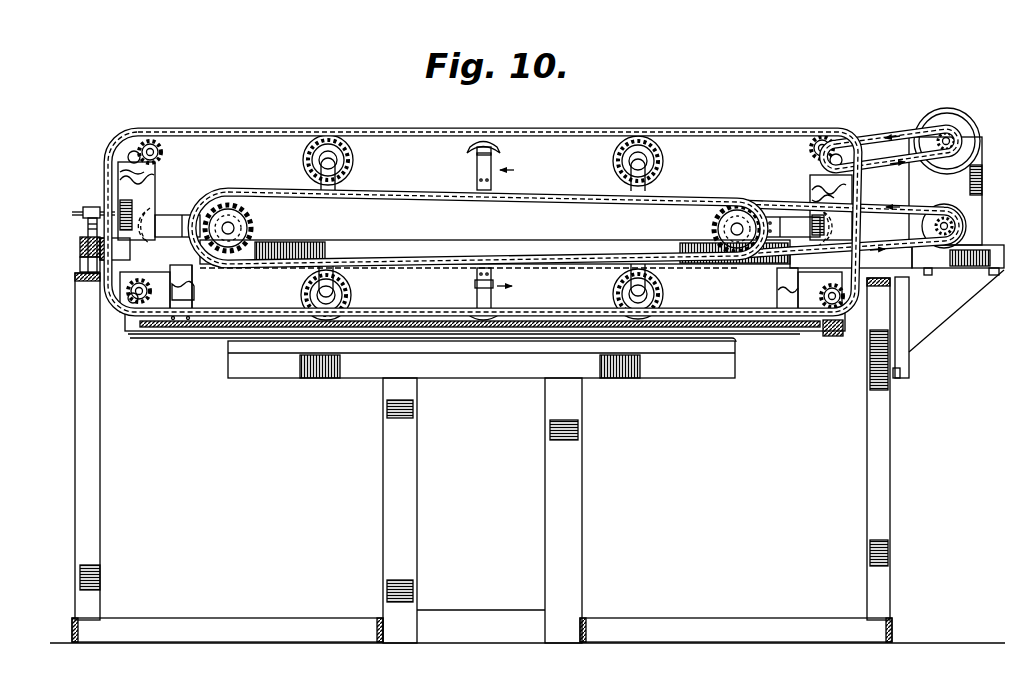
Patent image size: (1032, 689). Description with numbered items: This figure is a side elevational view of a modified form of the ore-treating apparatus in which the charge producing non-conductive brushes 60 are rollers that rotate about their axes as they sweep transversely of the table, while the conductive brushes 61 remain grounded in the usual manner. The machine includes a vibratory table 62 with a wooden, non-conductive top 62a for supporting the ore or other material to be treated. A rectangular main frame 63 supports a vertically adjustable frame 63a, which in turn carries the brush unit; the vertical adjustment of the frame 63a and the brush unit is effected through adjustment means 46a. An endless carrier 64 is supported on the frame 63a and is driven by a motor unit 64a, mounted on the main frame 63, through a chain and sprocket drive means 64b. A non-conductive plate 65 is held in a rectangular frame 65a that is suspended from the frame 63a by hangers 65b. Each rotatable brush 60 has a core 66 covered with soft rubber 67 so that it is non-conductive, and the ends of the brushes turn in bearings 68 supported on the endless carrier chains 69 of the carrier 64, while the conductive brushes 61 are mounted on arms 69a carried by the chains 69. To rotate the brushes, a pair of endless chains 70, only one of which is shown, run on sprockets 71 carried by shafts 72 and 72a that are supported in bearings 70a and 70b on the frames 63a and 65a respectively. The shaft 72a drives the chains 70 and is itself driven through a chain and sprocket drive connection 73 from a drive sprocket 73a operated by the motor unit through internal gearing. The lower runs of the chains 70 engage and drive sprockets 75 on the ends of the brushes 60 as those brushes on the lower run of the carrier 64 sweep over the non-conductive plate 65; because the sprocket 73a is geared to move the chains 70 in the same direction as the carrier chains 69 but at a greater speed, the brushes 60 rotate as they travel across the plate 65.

The adjustment means 46a is at (88, 208).
The charge producing non-conductive brushes 60 is at (353, 162).
The conductive brushes 61 is at (153, 214).
The vibratory table 62 is at (680, 378).
The non-conductive top 62a is at (228, 340).
The main frame 63 is at (73, 328).
The vertically adjustable frame 63a is at (426, 241).
The endless carrier 64 is at (583, 190).
The motor unit 64a is at (975, 141).
The chain and sprocket drive means 64b is at (876, 211).
The non-conductive plate 65 is at (180, 331).
The rectangular frame 65a is at (835, 330).
The hangers 65b is at (776, 285).
The core 66 is at (308, 157).
The soft rubber 67 is at (344, 152).
The bearings 68 is at (318, 164).
The endless carrier chains 69 is at (426, 197).
The arms 69a is at (476, 168).
The endless chains 70 is at (437, 128).
The bearings 70a is at (158, 178).
The bearings 70b is at (152, 330).
The sprockets 71 is at (152, 142).
The shaft 72 is at (127, 156).
The shaft 72a is at (829, 161).
The chain and sprocket drive connection 73 is at (906, 130).
The drive sprocket 73a is at (978, 159).
The sprockets 75 is at (342, 171).